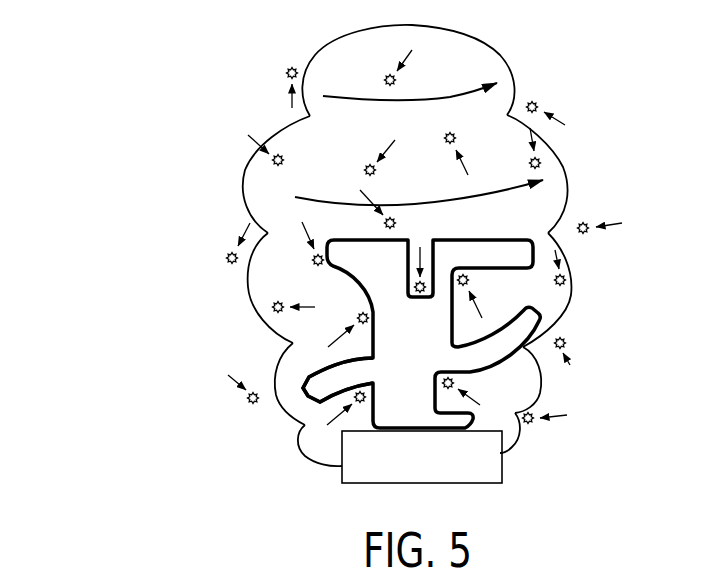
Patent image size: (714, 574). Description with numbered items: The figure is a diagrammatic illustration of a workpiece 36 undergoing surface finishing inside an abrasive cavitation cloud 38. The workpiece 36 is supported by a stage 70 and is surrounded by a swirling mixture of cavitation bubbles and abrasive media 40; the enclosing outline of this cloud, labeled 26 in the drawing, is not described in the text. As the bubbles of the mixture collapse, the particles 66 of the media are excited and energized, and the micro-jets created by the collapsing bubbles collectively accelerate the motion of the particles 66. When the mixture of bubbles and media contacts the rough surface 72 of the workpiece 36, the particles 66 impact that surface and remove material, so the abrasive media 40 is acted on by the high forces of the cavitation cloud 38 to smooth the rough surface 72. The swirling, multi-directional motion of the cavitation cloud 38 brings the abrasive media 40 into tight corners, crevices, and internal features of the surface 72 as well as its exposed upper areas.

The enclosure 26 is at (636, 174).
The cavitation cloud 38 is at (327, 67).
The workpiece 36 is at (313, 408).
The abrasive media 40 is at (266, 163).
The particles 66 is at (590, 235).
The stage 70 is at (488, 470).
The rough surface 72 is at (311, 372).